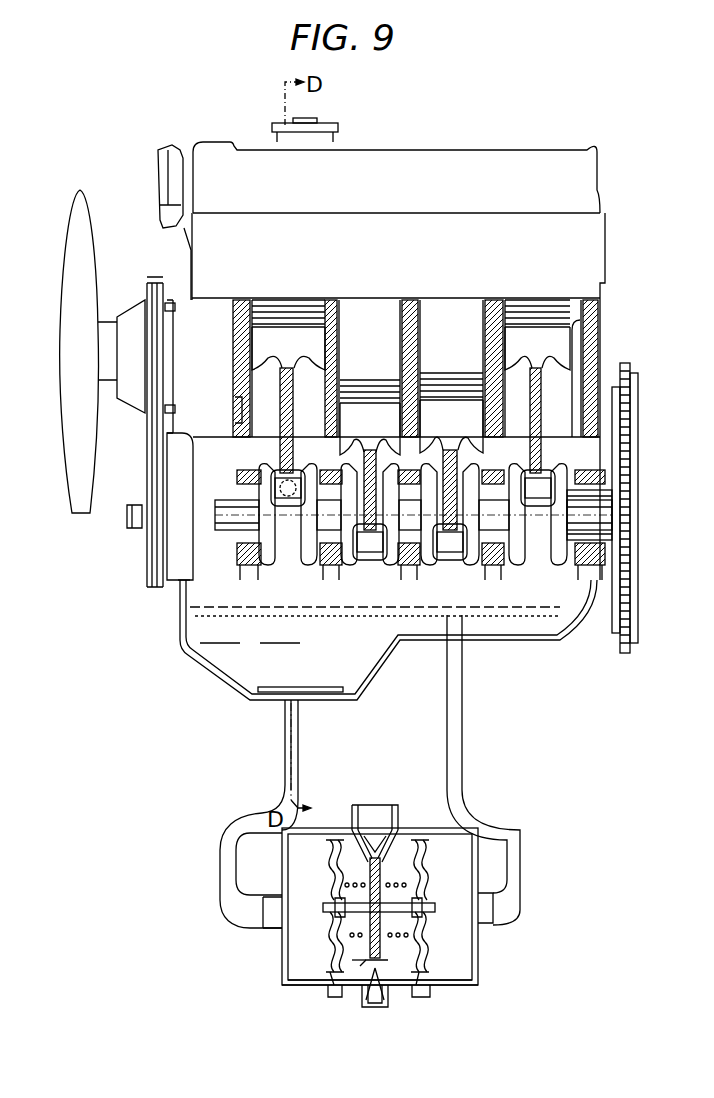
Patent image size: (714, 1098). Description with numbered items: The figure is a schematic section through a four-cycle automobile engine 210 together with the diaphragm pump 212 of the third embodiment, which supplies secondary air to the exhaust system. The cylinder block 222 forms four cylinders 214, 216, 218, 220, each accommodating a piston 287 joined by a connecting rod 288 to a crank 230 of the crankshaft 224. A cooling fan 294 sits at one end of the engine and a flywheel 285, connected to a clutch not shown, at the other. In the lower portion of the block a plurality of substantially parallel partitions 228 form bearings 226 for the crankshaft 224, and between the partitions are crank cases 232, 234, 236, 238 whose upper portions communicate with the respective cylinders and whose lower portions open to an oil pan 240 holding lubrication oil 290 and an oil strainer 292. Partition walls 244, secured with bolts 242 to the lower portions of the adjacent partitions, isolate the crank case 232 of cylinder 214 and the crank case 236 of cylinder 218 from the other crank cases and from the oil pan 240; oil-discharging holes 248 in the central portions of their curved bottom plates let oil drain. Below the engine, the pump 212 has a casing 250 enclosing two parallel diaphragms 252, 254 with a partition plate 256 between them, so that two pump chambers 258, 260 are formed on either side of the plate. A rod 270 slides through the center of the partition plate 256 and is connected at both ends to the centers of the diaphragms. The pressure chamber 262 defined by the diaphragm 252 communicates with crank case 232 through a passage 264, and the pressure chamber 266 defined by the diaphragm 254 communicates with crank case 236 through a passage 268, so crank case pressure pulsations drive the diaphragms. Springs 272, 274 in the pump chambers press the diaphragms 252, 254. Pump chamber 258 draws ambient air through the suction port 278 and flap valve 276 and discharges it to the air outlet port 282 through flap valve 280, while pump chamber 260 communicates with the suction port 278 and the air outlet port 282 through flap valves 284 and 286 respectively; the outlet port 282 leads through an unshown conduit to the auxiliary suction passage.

The 4-cycle engine 210 is at (604, 245).
The diaphragm pump 212 is at (478, 982).
The cylinder 214 is at (265, 385).
The cylinder 216 is at (345, 310).
The cylinder 218 is at (415, 312).
The cylinder 220 is at (603, 300).
The cylinder block 222 is at (600, 333).
The crankshaft 224 is at (503, 555).
The bearings 226 is at (245, 545).
The partitions 228 is at (238, 420).
The cranks 230 is at (262, 470).
The crank case 232 is at (275, 488).
The crank case 234 is at (347, 452).
The crank case 236 is at (478, 452).
The crank case 238 is at (595, 515).
The oil pan 240 is at (190, 655).
The bolts 242 is at (245, 600).
The partition walls 244 is at (262, 616).
The oil-discharging holes 248 is at (300, 630).
The casing 250 is at (478, 945).
The diaphragm 252 is at (322, 960).
The diaphragm 254 is at (425, 985).
The partition plate 256 is at (380, 858).
The pump chamber 258 is at (325, 975).
The pump chamber 260 is at (408, 970).
The pressure chamber 262 is at (305, 862).
The passage 264 is at (262, 795).
The pressure chamber 266 is at (455, 850).
The passage 268 is at (485, 795).
The rod 270 is at (335, 905).
The spring 272 is at (330, 985).
The spring 274 is at (430, 945).
The flap valve 276 is at (360, 985).
The suction port 278 is at (372, 1005).
The flap valve 280 is at (362, 806).
The air outlet port 282 is at (375, 808).
The flap valve 284 is at (390, 1003).
The flywheel 285 is at (635, 545).
The flap valve 286 is at (385, 840).
The pistons 287 is at (266, 312).
The connecting rods 288 is at (290, 368).
The lubrication oil 290 is at (266, 671).
The oil strainer 292 is at (285, 703).
The cooling fan 294 is at (66, 435).